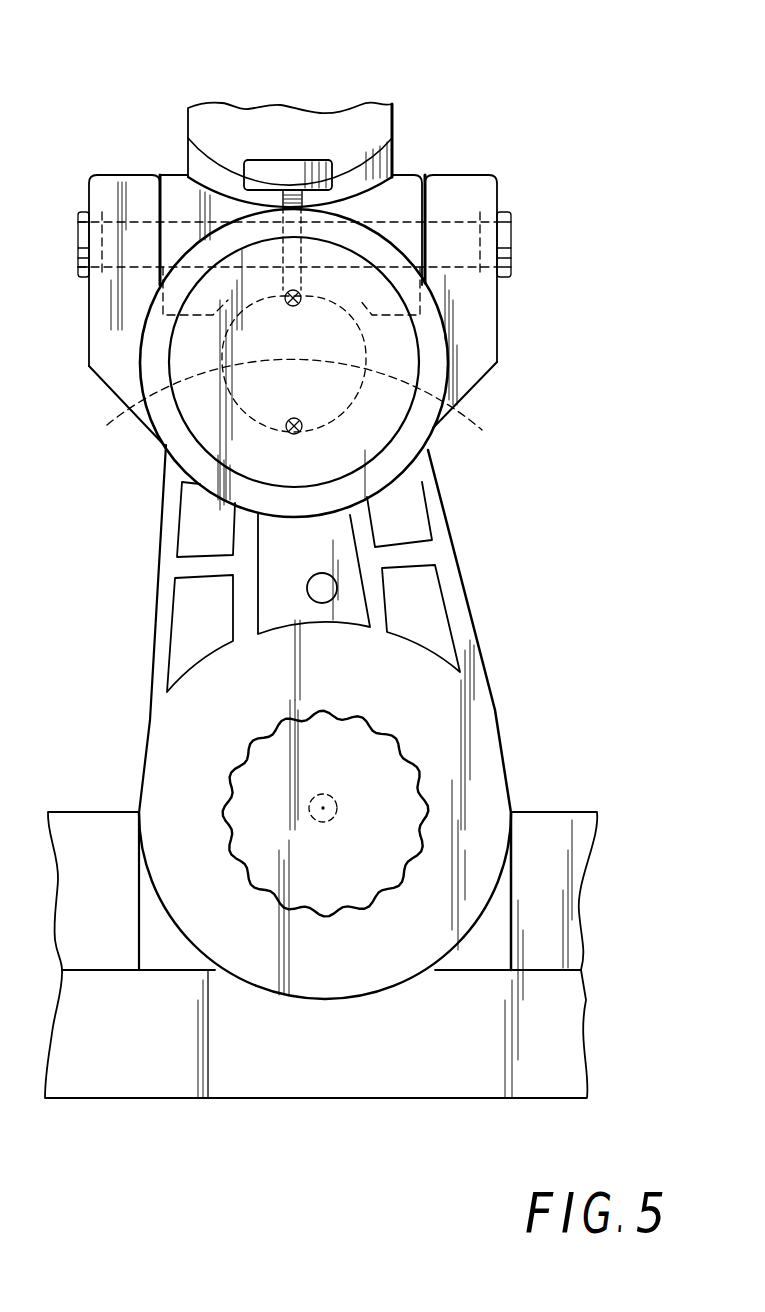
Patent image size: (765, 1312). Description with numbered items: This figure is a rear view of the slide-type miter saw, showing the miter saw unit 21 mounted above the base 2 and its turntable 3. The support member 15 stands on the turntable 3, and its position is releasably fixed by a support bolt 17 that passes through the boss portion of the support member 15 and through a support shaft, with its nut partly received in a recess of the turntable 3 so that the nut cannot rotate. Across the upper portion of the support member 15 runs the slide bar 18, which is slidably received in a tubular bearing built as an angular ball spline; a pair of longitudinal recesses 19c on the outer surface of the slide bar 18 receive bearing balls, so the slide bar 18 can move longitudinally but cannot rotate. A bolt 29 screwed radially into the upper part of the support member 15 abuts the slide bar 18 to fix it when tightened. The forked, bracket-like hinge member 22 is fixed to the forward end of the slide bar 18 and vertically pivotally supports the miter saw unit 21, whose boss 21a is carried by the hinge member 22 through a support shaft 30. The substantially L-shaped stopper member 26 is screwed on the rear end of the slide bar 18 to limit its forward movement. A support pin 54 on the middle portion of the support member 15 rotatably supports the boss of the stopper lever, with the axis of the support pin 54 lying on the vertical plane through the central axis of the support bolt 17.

The base 2 is at (555, 1018).
The turntable 3 is at (580, 812).
The support member 15 is at (470, 638).
The support bolt 17 is at (340, 807).
The slide bar 18 is at (345, 331).
The longitudinal recesses 19c is at (287, 369).
The miter saw unit 21 is at (368, 100).
The boss 21a is at (406, 186).
The hinge member 22 is at (480, 308).
The stopper member 26 is at (430, 437).
The bolt 29 is at (273, 165).
The support shaft 30 is at (452, 218).
The support pin 54 is at (332, 583).